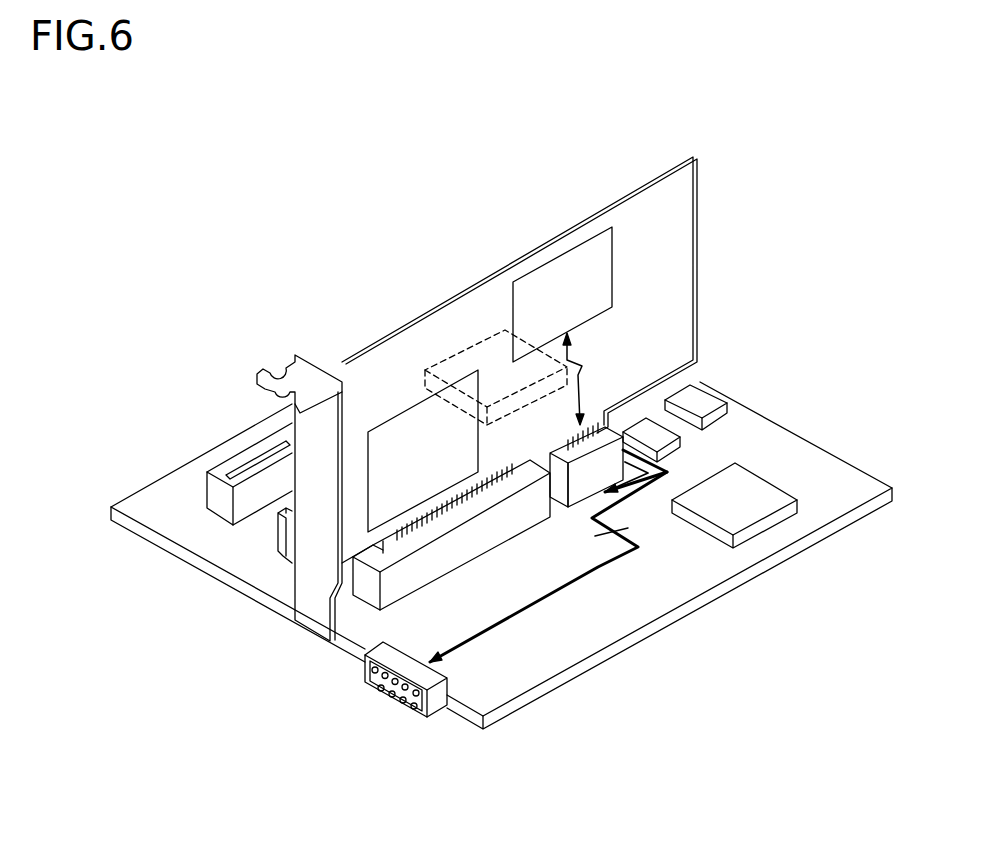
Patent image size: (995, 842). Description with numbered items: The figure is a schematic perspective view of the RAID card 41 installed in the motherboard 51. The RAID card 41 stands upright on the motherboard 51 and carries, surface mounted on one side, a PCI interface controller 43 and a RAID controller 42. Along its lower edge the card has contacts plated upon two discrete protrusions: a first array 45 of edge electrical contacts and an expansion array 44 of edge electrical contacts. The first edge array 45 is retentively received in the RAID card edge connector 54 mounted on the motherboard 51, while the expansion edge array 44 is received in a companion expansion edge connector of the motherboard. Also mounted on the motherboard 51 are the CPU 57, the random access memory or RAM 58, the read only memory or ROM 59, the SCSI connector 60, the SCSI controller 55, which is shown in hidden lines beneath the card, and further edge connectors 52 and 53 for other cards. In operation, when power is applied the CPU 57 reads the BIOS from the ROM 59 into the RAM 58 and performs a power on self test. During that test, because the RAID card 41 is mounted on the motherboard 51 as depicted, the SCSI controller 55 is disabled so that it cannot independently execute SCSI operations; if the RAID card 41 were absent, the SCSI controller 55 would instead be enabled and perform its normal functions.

The RAID card 41 is at (417, 318).
The RAID controller 42 is at (568, 251).
The PCI interface controller 43 is at (379, 427).
The expansion array of edge electrical contacts 44 is at (605, 410).
The first array of edge electrical contacts 45 is at (385, 542).
The motherboard 51 is at (243, 443).
The edge connector 52 is at (220, 505).
The edge connector 53 is at (280, 543).
The RAID card edge connector 54 is at (366, 592).
The SCSI controller 55 is at (482, 333).
The CPU 57 is at (768, 482).
The random access memory (RAM) 58 is at (652, 413).
The read only memory (ROM) 59 is at (690, 387).
The SCSI connector 60 is at (362, 688).